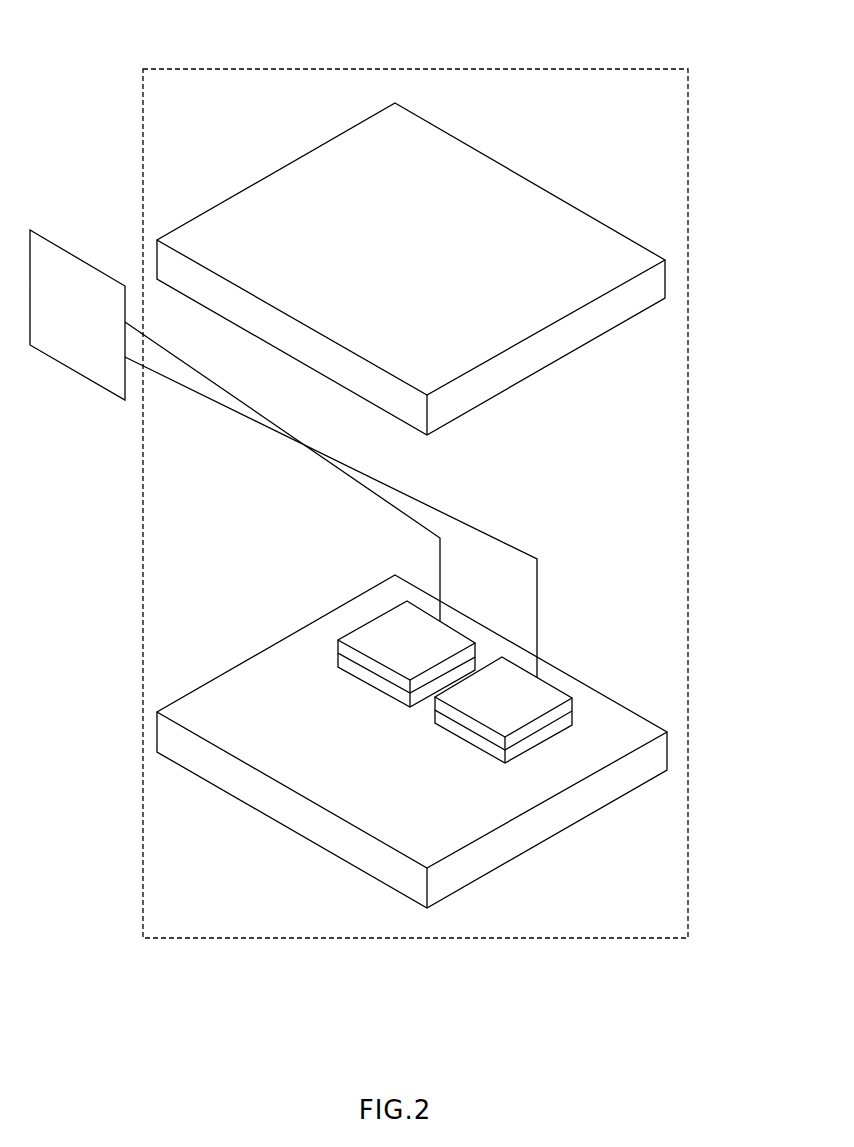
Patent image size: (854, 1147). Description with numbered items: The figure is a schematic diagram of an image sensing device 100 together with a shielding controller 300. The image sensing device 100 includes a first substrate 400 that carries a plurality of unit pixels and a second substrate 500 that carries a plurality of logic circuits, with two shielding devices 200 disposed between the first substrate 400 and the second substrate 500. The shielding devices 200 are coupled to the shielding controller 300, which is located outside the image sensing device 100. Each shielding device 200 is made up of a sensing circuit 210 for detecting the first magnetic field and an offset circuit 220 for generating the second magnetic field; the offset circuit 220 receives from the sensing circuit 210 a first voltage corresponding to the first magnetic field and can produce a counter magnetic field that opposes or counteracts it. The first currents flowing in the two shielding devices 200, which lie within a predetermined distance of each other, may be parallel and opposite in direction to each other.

The image sensing device 100 is at (227, 69).
The shielding device 200 is at (494, 668).
The sensing circuit 210 is at (337, 647).
The offset circuit 220 is at (337, 660).
The shielding controller 300 is at (77, 375).
The first substrate 400 is at (210, 208).
The second substrate 500 is at (157, 728).